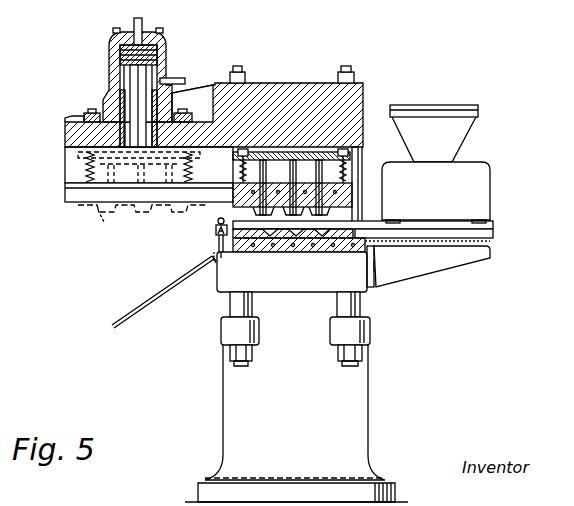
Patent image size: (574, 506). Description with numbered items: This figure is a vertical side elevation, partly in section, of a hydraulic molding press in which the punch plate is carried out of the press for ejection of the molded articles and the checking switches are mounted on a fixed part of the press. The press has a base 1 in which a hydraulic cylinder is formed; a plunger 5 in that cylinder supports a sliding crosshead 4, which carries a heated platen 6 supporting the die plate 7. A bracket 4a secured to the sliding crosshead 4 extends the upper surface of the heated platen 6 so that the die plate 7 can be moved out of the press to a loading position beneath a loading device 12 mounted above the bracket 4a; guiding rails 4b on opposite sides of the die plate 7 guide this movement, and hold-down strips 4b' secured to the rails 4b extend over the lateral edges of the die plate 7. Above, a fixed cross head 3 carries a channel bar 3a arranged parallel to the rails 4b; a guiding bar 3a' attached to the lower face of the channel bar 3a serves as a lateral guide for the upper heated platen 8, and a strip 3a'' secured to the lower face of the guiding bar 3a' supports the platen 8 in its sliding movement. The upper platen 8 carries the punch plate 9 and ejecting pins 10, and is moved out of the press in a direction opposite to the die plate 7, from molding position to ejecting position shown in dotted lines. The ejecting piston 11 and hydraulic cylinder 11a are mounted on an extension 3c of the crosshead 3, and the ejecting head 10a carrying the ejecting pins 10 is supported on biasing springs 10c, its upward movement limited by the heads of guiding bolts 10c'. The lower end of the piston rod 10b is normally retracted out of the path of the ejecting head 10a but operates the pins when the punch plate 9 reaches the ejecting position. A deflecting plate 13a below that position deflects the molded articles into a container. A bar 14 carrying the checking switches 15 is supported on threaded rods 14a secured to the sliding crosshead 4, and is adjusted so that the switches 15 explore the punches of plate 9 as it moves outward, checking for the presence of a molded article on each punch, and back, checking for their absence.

The base 1 is at (364, 388).
The fixed cross head 3 is at (363, 96).
The channel bar 3a is at (128, 165).
The guiding bar 3a' is at (128, 202).
The strip 3a'' is at (125, 227).
The extension of crosshead 3c is at (68, 124).
The sliding crosshead 4 is at (218, 285).
The bracket 4a is at (424, 265).
The guiding rails 4b is at (439, 238).
The hold-down strips 4b' is at (380, 217).
The plunger 5 is at (342, 308).
The heated platen 6 is at (262, 252).
The die plate 7 is at (240, 240).
The upper heated platen 8 is at (234, 186).
The punch plate 9 is at (100, 214).
The ejecting pins 10 is at (296, 175).
The ejecting head 10a is at (356, 152).
The piston rod 10b is at (140, 82).
The biasing springs 10c is at (297, 165).
The guiding bolts 10c' is at (413, 124).
The piston 11 is at (150, 57).
The hydraulic cylinder 11a is at (109, 60).
The loading device 12 is at (478, 170).
The deflecting plate 13a is at (140, 306).
The bar 14 is at (212, 241).
The threaded rods 14a is at (215, 253).
The checking switches 15 is at (215, 229).